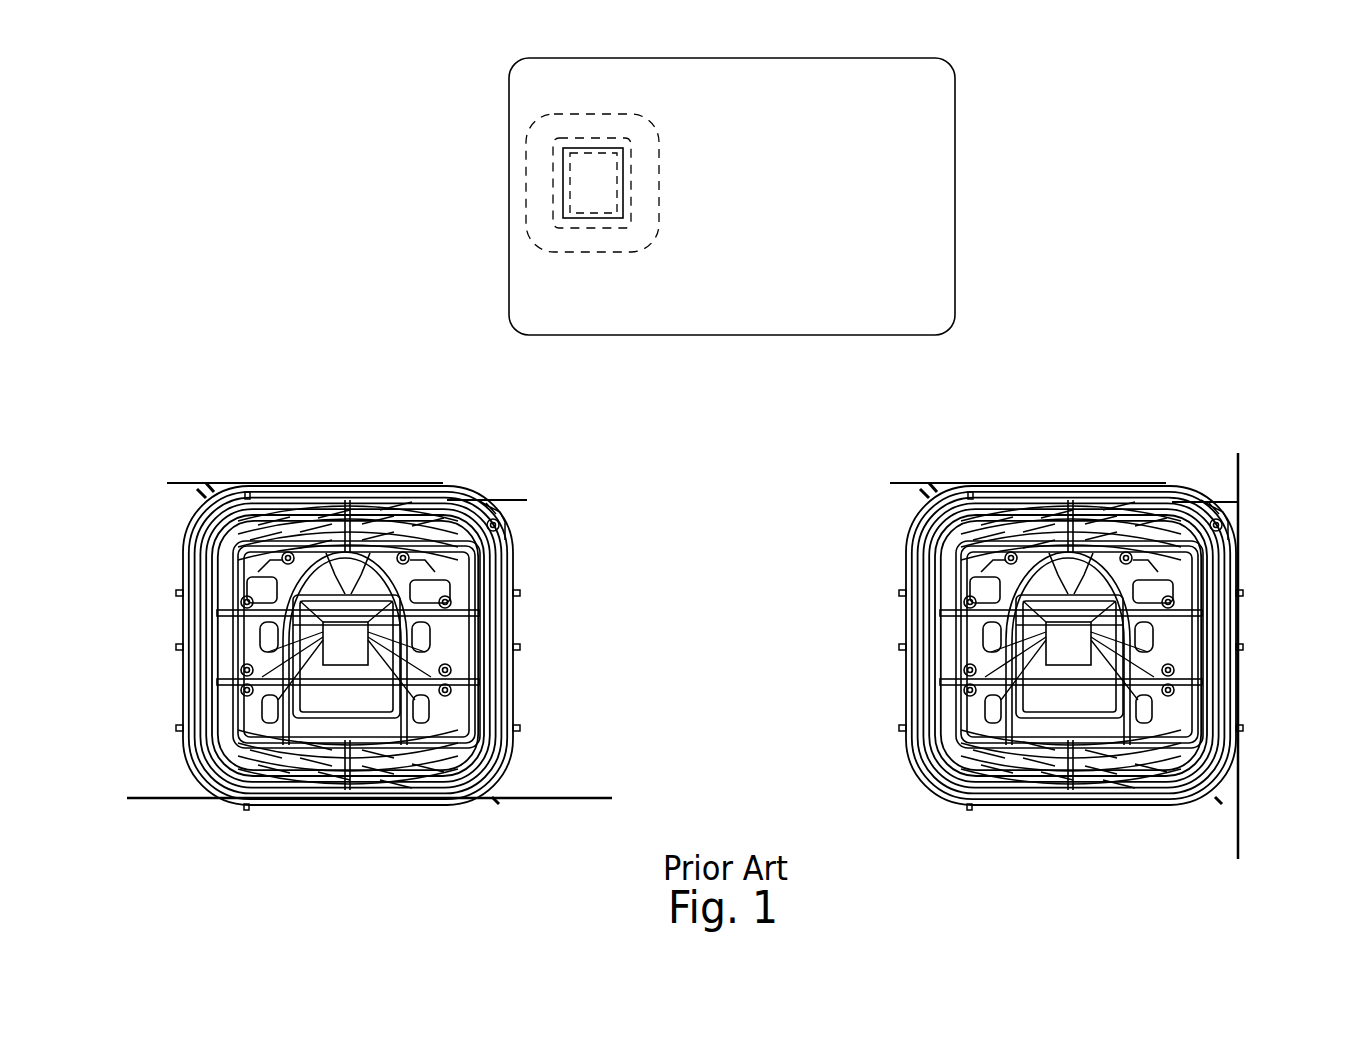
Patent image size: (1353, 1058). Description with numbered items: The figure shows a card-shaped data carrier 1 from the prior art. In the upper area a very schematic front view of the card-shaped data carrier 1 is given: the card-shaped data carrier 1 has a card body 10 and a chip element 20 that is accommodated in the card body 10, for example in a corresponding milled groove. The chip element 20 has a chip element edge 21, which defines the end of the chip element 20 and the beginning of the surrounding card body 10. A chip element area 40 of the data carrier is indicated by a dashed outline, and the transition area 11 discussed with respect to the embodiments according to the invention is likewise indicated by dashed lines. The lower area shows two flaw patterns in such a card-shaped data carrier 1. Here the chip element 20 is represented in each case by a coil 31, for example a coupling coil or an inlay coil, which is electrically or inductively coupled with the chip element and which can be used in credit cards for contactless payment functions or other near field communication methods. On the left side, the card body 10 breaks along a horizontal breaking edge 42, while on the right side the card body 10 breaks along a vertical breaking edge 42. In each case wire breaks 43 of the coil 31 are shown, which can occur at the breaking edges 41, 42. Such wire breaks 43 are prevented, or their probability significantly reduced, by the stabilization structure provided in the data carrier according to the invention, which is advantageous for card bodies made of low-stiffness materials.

The card-shaped data carrier 1 is at (997, 70).
The card body 10 is at (965, 197).
The transition area 11 is at (634, 185).
The chip element 20 is at (604, 165).
The chip element edge 21 is at (630, 165).
The coil 31 is at (447, 488).
The chip element area 40 is at (658, 242).
The breaking edge 41 is at (153, 802).
The breaking edge 42 is at (1243, 847).
The wire breaks 43 is at (257, 802).